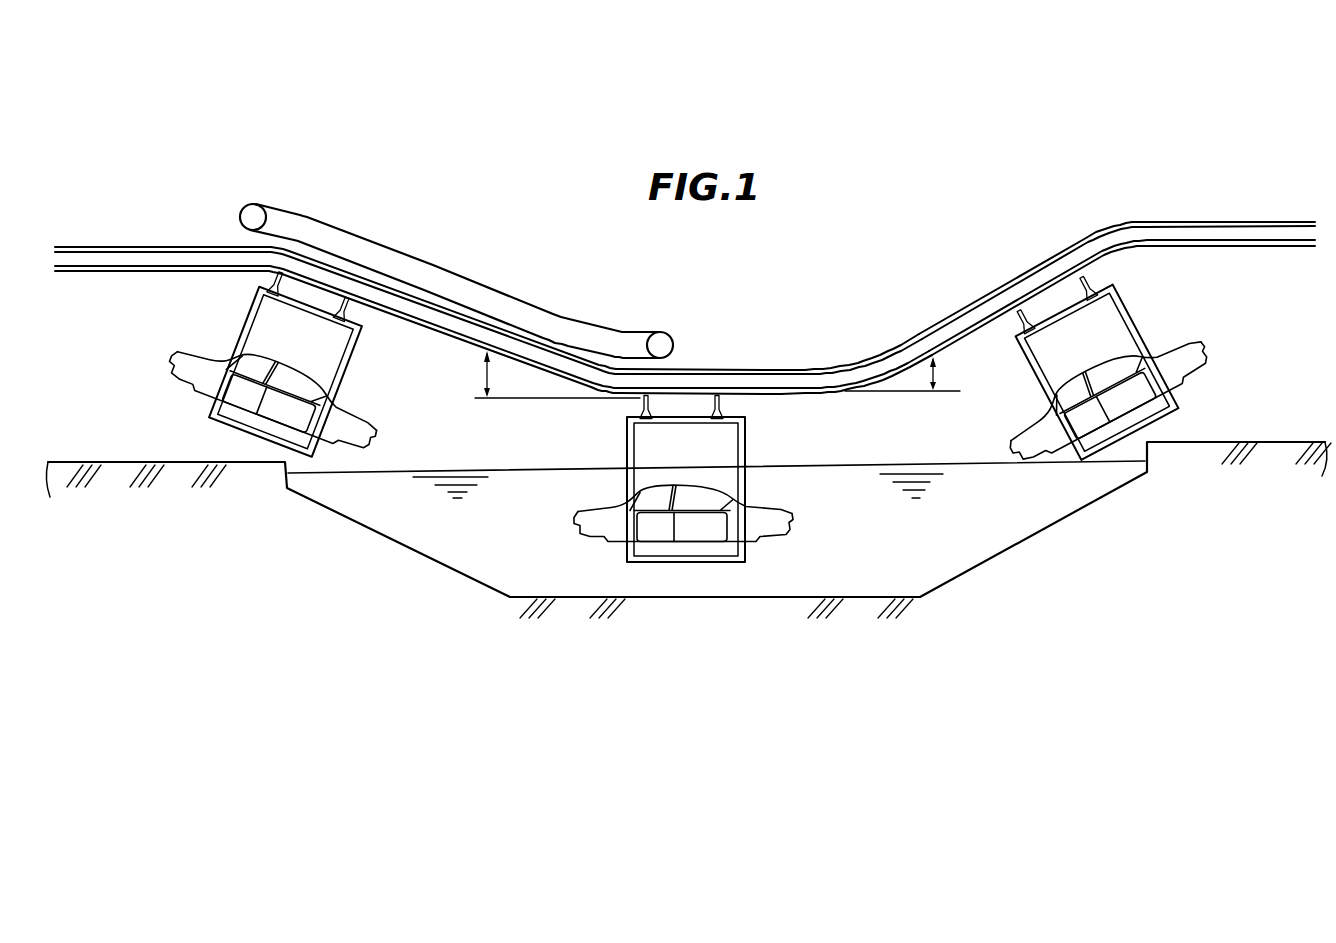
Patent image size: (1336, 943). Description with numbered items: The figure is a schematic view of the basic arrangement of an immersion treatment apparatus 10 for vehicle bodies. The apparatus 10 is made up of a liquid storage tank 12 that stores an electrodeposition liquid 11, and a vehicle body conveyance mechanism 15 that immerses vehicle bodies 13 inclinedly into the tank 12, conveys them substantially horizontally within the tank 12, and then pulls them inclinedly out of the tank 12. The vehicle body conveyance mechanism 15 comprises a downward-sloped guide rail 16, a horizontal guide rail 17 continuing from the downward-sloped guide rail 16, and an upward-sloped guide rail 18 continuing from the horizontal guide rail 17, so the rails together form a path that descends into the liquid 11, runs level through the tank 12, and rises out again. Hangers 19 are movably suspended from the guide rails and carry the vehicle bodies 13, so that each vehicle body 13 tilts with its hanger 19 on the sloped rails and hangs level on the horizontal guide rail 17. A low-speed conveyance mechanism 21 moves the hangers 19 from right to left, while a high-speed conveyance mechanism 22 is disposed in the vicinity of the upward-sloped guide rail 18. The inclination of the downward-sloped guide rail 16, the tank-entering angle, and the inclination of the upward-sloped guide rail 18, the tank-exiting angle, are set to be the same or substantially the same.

The immersion treatment apparatus 10 is at (352, 103).
The electrodeposition liquid 11 is at (810, 490).
The liquid storage tank 12 is at (1002, 543).
The vehicle body 13 is at (178, 366).
The vehicle body conveyance mechanism 15 is at (1013, 273).
The downward-sloped guide rail 16 is at (985, 330).
The horizontal guide rail 17 is at (778, 395).
The upward-sloped guide rail 18 is at (414, 324).
The hanger 19 is at (247, 321).
The low-speed conveyance mechanism 21 is at (860, 360).
The high-speed conveyance mechanism 22 is at (420, 259).